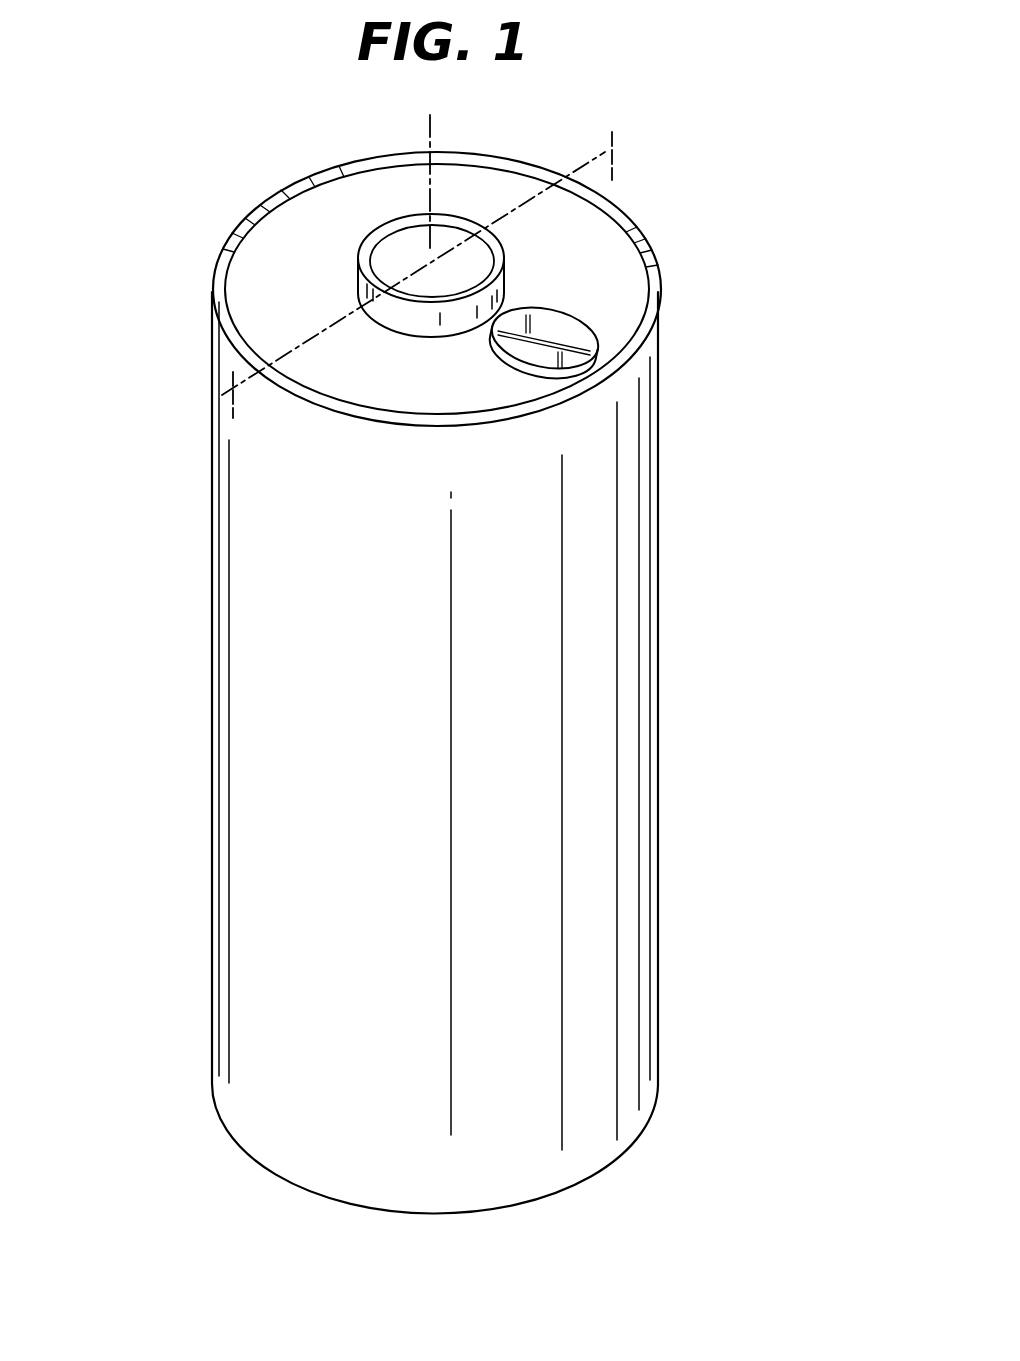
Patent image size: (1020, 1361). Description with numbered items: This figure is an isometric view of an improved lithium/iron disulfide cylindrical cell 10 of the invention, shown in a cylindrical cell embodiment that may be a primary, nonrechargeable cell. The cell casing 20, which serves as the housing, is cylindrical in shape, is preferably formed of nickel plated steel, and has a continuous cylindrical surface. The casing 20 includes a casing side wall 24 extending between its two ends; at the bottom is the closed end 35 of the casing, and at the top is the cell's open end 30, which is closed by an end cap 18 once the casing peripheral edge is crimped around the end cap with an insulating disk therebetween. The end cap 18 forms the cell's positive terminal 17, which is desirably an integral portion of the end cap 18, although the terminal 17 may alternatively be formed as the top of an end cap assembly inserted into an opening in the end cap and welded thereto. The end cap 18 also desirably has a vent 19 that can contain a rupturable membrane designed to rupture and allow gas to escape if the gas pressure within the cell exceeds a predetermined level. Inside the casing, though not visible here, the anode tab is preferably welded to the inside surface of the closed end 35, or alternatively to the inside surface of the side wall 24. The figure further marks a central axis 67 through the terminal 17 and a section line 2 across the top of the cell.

The Li/FeS₂ cylindrical cell 10 is at (160, 589).
The positive terminal 17 is at (395, 218).
The central axis 67 is at (430, 197).
The section line 2- 2 is at (235, 386).
The open end 30 is at (575, 232).
The end cap 18 is at (630, 292).
The vent 19 is at (595, 329).
The casing side wall 24 is at (660, 522).
The cell casing 20 is at (660, 577).
The closed end 35 is at (370, 1212).